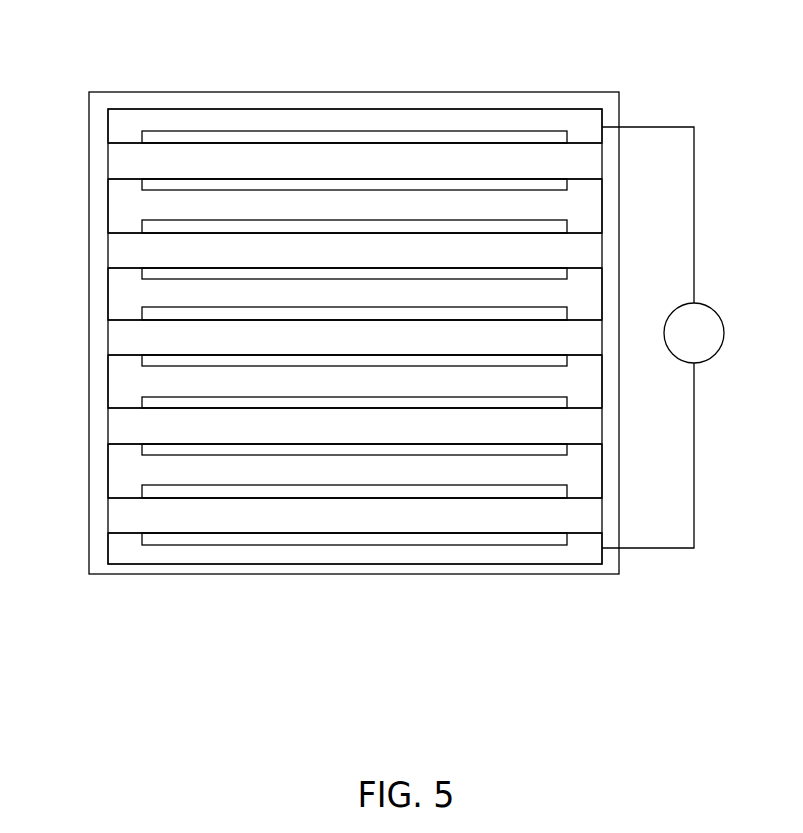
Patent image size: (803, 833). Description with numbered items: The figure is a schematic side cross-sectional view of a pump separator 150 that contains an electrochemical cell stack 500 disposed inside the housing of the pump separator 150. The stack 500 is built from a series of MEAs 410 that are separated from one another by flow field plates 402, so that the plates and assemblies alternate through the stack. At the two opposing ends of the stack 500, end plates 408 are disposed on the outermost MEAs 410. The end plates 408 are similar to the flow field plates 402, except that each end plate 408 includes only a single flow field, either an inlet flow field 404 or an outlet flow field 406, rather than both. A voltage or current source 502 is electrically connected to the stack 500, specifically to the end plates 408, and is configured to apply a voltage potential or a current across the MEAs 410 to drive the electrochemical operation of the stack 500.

The pump separator 150 is at (89, 333).
The flow field plate 402 is at (108, 212).
The inlet flow field 404 is at (425, 131).
The outlet flow field 406 is at (142, 186).
The end plate 408 is at (108, 125).
The MEA 410 is at (355, 338).
The electrochemical cell stack 500 is at (305, 90).
The voltage or current source 502 is at (724, 334).